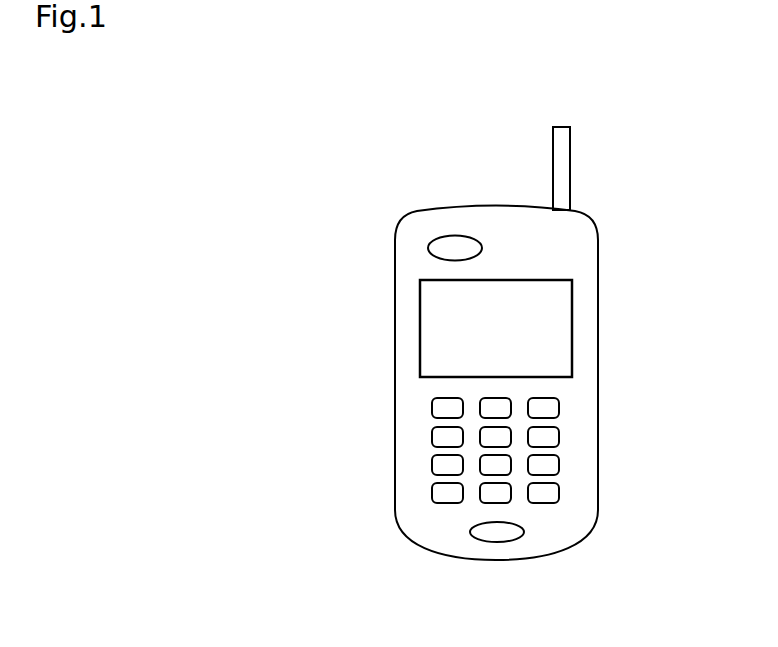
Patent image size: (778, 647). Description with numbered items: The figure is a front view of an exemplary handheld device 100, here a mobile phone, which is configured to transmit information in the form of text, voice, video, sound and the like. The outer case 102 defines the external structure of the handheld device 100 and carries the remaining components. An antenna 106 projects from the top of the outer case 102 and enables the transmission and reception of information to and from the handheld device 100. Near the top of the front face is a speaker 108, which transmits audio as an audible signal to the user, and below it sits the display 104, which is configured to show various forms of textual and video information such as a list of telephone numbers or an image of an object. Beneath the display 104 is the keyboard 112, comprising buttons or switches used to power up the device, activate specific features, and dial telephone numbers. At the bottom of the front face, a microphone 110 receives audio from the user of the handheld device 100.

The handheld device 100 is at (536, 369).
The outer case 102 is at (598, 378).
The display 104 is at (572, 325).
The antenna 106 is at (570, 168).
The speaker 108 is at (452, 235).
The microphone 110 is at (497, 543).
The keyboard 112 is at (562, 448).